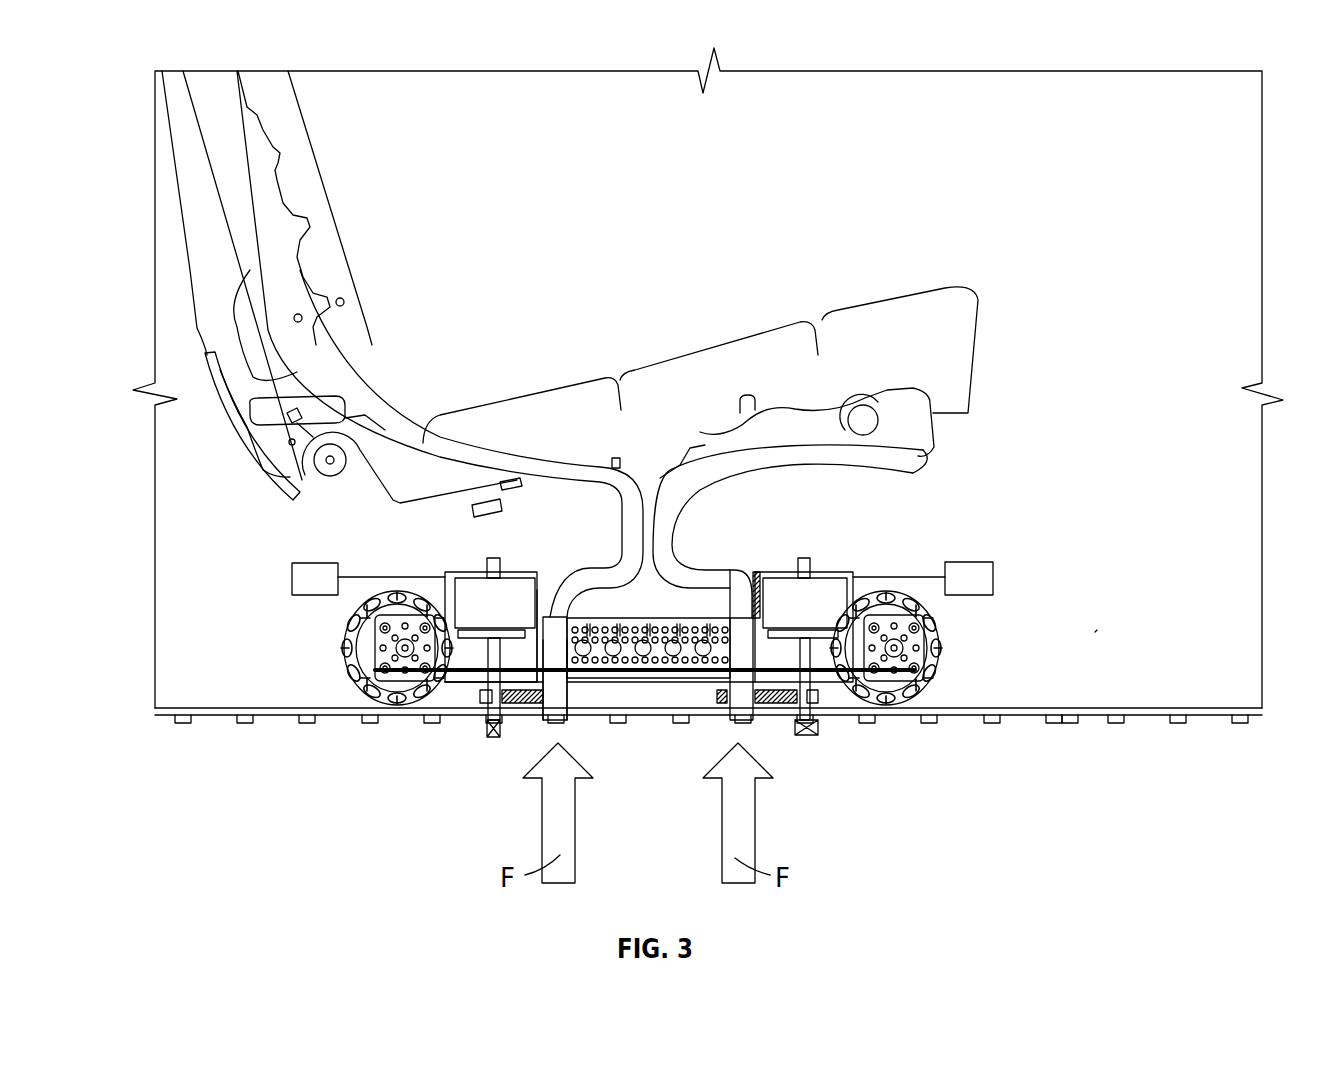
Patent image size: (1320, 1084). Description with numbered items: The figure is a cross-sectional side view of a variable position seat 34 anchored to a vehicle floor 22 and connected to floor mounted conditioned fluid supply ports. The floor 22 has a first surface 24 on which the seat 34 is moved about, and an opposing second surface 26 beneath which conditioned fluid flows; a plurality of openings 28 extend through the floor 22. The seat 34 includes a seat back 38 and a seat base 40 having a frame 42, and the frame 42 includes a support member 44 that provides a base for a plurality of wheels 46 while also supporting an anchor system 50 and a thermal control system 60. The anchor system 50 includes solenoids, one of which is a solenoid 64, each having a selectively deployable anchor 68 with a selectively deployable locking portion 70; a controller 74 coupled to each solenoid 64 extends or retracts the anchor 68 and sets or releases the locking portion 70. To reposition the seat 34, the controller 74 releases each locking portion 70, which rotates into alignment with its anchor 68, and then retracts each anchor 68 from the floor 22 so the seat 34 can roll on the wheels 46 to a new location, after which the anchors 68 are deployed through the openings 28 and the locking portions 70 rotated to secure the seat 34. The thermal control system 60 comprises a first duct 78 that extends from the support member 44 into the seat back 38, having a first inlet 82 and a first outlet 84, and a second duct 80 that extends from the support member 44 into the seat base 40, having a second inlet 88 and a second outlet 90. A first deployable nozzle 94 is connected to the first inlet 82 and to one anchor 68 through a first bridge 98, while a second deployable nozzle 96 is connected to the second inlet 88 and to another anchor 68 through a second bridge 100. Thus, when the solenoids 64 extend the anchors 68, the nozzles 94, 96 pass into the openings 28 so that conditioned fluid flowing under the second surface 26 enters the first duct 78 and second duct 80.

The floor 22 is at (1098, 628).
The first surface 24 is at (1130, 706).
The second surface 26 is at (1080, 724).
The openings 28 is at (990, 724).
The seat 34 is at (702, 180).
The seat back 38 is at (297, 133).
The seat base 40 is at (970, 344).
The frame 42 is at (937, 432).
The support member 44 is at (638, 680).
The wheels 46 is at (348, 628).
The anchor system 50 is at (392, 540).
The thermal control system 60 is at (728, 548).
The solenoid 64 is at (487, 586).
The selectively deployable anchor 68 is at (480, 698).
The selectively deployable locking portion 70 is at (490, 738).
The controller 74 is at (642, 578).
The first duct 78 is at (587, 578).
The second duct 80 is at (770, 578).
The first inlet 82 is at (540, 612).
The first outlet 84 is at (172, 76).
The second inlet 88 is at (738, 660).
The second outlet 90 is at (915, 475).
The first deployable nozzle 94 is at (545, 692).
The second deployable nozzle 96 is at (765, 722).
The first bridge 98 is at (575, 722).
The second bridge 100 is at (728, 675).